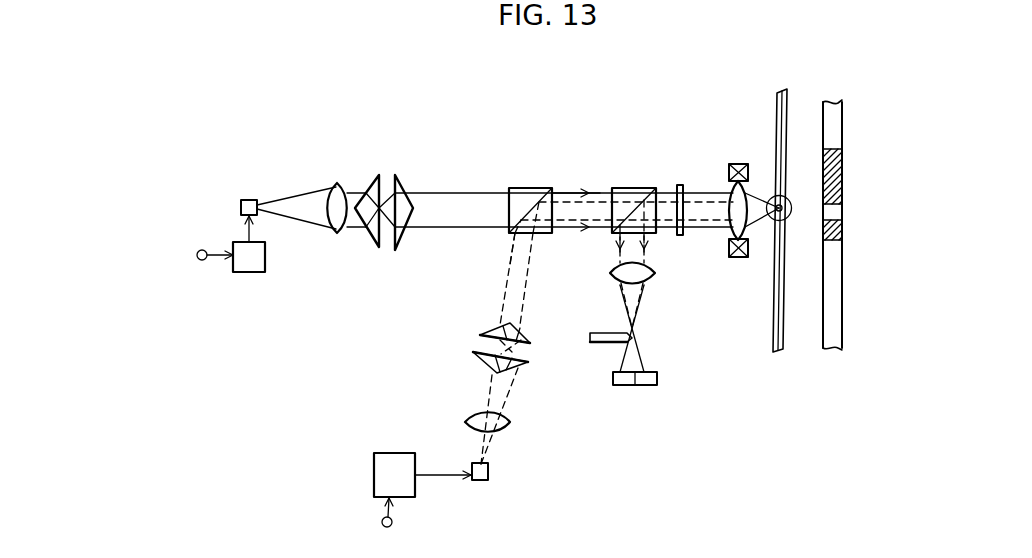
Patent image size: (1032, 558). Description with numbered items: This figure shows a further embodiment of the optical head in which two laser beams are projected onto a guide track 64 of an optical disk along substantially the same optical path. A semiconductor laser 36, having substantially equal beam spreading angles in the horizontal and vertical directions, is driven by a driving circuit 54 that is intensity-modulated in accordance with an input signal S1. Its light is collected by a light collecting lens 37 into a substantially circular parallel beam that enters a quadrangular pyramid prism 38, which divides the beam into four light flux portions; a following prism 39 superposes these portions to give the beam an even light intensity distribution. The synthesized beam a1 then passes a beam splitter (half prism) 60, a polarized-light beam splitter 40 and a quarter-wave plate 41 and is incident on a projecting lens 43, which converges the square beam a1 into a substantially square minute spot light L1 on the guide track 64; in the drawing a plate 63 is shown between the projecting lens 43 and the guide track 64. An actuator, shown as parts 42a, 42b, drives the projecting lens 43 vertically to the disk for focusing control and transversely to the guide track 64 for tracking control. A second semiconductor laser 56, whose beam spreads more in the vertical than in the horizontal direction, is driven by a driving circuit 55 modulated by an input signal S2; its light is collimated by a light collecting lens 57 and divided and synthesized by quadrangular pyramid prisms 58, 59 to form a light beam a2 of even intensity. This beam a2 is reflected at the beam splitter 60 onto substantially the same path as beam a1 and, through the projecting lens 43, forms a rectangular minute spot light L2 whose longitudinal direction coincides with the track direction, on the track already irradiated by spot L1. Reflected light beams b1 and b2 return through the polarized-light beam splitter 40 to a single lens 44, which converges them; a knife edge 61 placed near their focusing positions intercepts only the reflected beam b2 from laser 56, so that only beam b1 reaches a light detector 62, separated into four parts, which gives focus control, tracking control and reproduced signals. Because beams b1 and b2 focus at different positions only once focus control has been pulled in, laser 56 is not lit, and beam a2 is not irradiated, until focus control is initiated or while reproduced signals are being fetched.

The semiconductor laser 36 is at (250, 200).
The light collecting lens 37 is at (337, 183).
The quadrangular pyramid prism 38 is at (379, 175).
The prism 39 is at (398, 175).
The polarized-light beam splitter 40 is at (634, 188).
The λ/4 plate 41 is at (680, 185).
The actuator 42a is at (740, 164).
The actuator 42b is at (738, 258).
The projecting lens 43 is at (733, 241).
The single lens 44 is at (611, 275).
The driving circuit 54 is at (246, 273).
The driving circuit 55 is at (375, 468).
The semiconductor laser 56 is at (489, 473).
The light collecting lens 57 is at (511, 421).
The quadrangular pyramid prism 58 is at (472, 353).
The quadrangular pyramid prism 59 is at (481, 334).
The beam splitter (half prism) 60 is at (528, 188).
The knife edge 61 is at (592, 343).
The light detector 62 is at (658, 380).
The transparent plate 63 is at (782, 145).
The guide track 64 is at (843, 107).
The input signal S1 is at (202, 250).
The input signal S2 is at (382, 522).
The minute spot light L1 is at (843, 228).
The minute spot light L2 is at (843, 178).
The light beam a1 is at (576, 190).
The light beam a2 is at (536, 249).
The reflected light beam b1 is at (662, 248).
The reflected light beam b2 is at (605, 248).